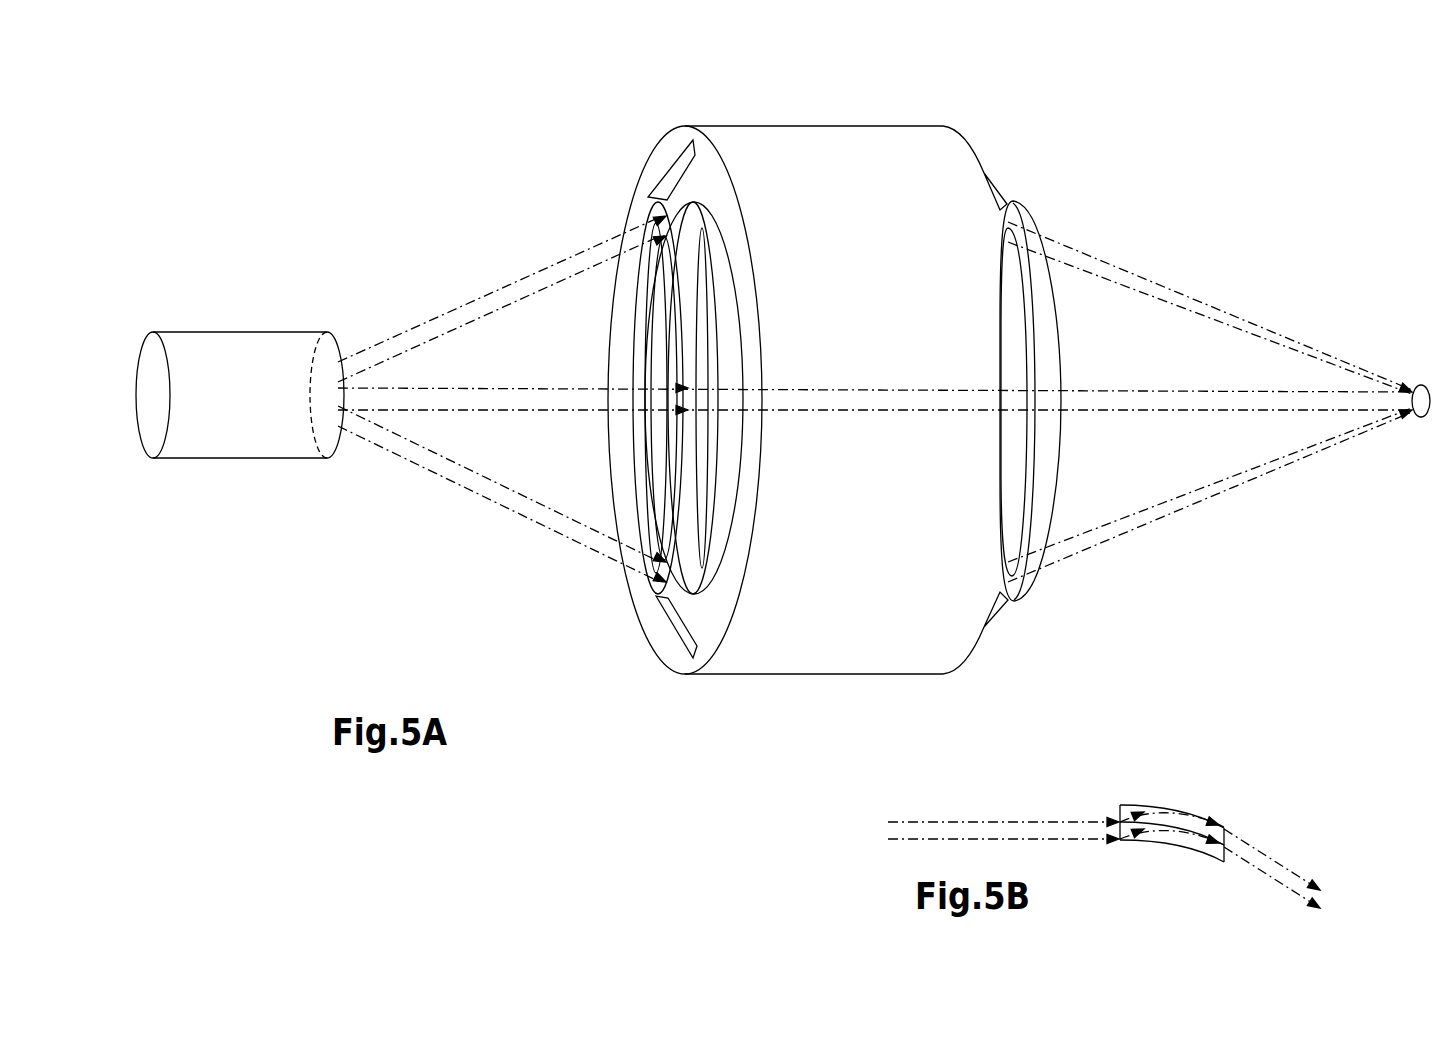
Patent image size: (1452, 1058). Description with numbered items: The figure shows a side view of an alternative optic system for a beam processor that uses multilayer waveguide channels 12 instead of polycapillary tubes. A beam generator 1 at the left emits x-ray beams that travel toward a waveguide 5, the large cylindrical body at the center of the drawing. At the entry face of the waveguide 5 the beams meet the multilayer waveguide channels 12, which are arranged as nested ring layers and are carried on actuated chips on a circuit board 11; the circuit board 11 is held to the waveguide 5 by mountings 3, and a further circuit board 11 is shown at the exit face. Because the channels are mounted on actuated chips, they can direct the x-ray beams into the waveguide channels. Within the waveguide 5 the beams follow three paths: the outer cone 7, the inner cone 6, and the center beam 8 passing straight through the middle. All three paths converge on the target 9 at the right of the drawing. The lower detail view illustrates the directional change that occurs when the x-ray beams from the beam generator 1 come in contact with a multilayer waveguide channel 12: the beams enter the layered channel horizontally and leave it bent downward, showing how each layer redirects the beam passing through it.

In FIG. 5A, the beam generator 1 is at (398, 399).
In FIG. 5B, the beam generator 1 is at (933, 839).
In FIG. 5A, the mountings 3 is at (672, 623).
In FIG. 5A, the waveguide 5 is at (796, 383).
In FIG. 5A, the inner cone 6 is at (1142, 510).
In FIG. 5A, the outer cone 7 is at (1100, 257).
In FIG. 5A, the center beam 8 is at (875, 389).
In FIG. 5A, the target 9 is at (1421, 385).
In FIG. 5A, the circuit board 11 is at (1112, 612).
In FIG. 5A, the multilayer waveguide channel 12 is at (648, 207).
In FIG. 5B, the multilayer waveguide channel 12 is at (1212, 842).